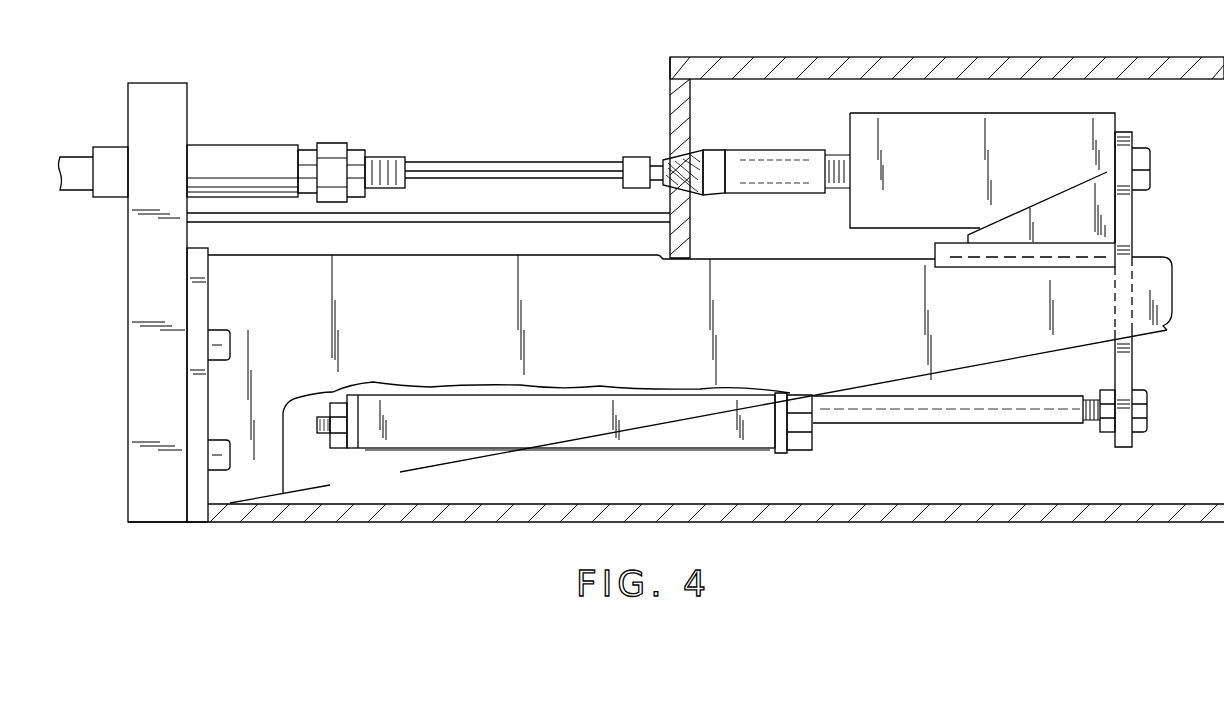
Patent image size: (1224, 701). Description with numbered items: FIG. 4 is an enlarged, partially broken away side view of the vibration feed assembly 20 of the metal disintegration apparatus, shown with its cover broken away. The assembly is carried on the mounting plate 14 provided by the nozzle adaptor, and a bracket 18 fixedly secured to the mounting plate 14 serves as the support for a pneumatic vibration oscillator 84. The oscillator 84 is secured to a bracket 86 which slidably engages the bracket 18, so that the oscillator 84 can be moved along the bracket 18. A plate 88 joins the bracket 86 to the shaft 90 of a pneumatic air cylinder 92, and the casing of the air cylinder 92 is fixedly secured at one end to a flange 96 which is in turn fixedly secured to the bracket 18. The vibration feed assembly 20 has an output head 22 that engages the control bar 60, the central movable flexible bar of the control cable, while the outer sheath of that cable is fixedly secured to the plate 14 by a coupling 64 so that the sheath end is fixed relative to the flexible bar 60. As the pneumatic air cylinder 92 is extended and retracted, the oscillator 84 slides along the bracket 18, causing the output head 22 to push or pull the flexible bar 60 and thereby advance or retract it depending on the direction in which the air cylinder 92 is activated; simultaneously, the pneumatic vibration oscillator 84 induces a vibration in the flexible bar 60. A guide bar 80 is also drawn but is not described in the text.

The mounting plate 14 is at (172, 98).
The bracket 18 is at (252, 488).
The vibration feed assembly 20 is at (1018, 38).
The output head 22 is at (698, 150).
The control bar 60 is at (477, 167).
The coupling 64 is at (127, 197).
The guide bar 80 is at (486, 215).
The pneumatic vibration oscillator 84 is at (1107, 125).
The bracket 86 is at (1102, 218).
The plate 88 is at (1123, 372).
The shaft 90 is at (997, 422).
The pneumatic air cylinder 92 is at (683, 445).
The flange 96 is at (352, 443).